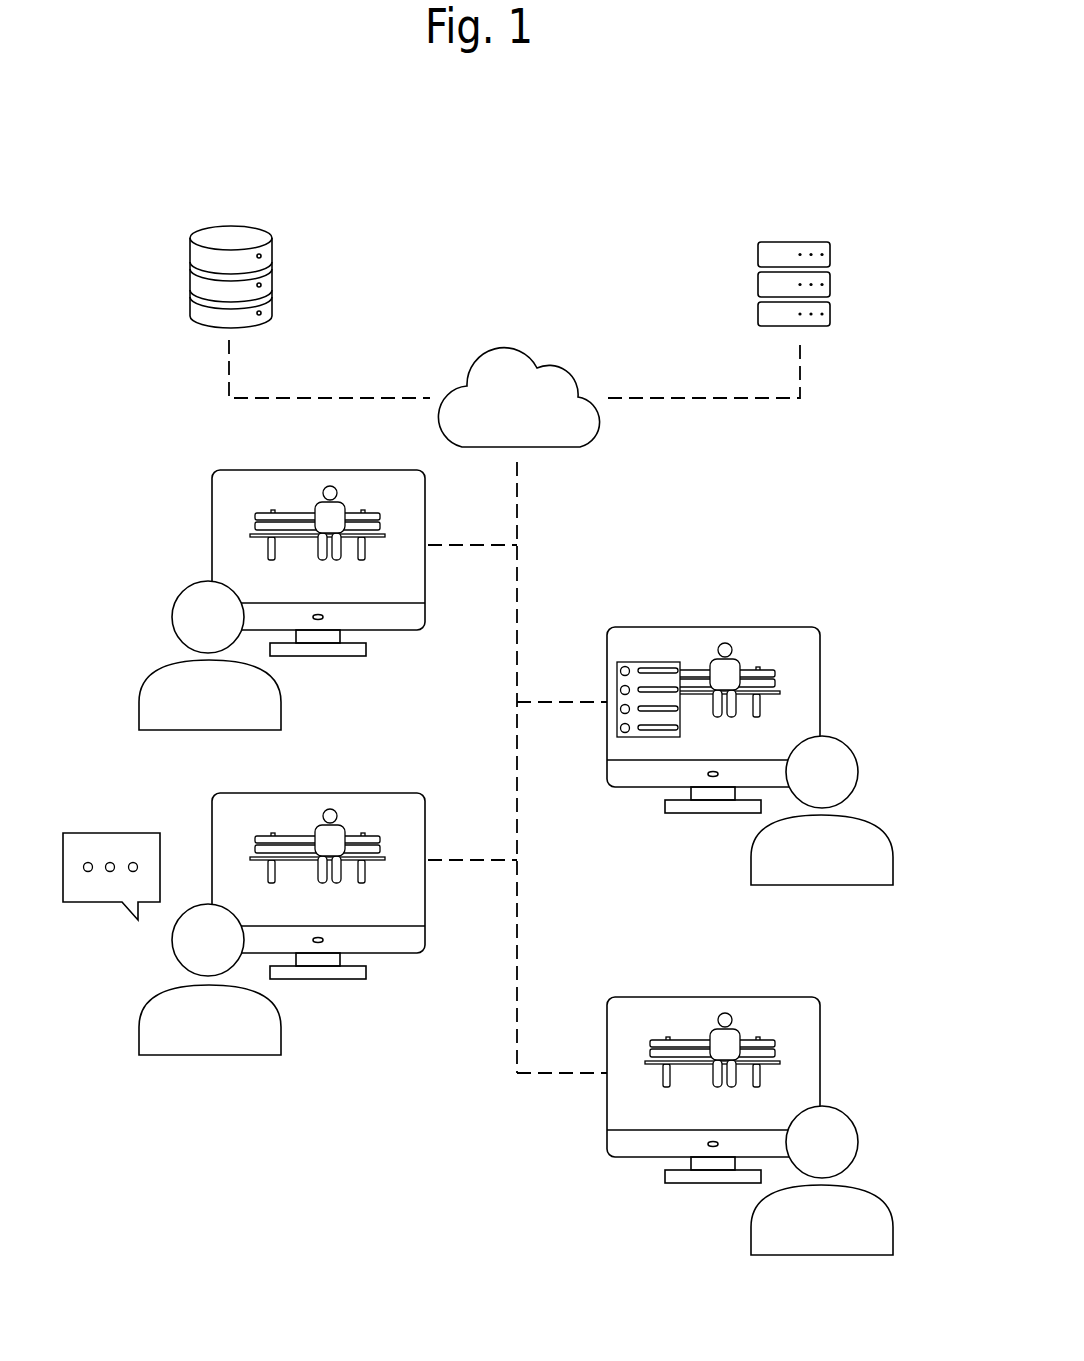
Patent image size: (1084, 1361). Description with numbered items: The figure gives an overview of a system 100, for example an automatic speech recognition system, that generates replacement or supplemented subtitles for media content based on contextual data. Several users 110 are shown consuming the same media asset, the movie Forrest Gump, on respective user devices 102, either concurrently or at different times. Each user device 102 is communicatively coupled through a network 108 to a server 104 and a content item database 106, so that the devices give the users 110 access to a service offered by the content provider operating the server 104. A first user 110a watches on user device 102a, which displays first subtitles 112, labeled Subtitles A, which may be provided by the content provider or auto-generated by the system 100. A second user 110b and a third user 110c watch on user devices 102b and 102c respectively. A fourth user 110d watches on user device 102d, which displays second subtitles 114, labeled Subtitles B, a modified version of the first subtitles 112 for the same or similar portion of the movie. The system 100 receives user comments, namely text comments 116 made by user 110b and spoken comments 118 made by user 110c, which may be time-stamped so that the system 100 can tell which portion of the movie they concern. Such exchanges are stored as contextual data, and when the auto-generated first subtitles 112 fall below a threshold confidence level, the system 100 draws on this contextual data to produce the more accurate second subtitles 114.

The system 100 is at (213, 104).
The user devices 102 is at (480, 801).
The user device 102a is at (250, 448).
The user device 102b is at (690, 627).
The user device 102c is at (363, 793).
The user device 102d is at (690, 997).
The server 104 is at (797, 242).
The content item database 106 is at (229, 227).
The network 108 is at (500, 348).
The users 110 is at (499, 946).
The first user 110a is at (140, 690).
The second user 110b is at (838, 877).
The third user 110c is at (205, 1057).
The fourth user 110d is at (838, 1250).
The first subtitles 112 is at (378, 581).
The second subtitles 114 is at (655, 1113).
The text comments 116 is at (617, 680).
The spoken comments 118 is at (107, 833).